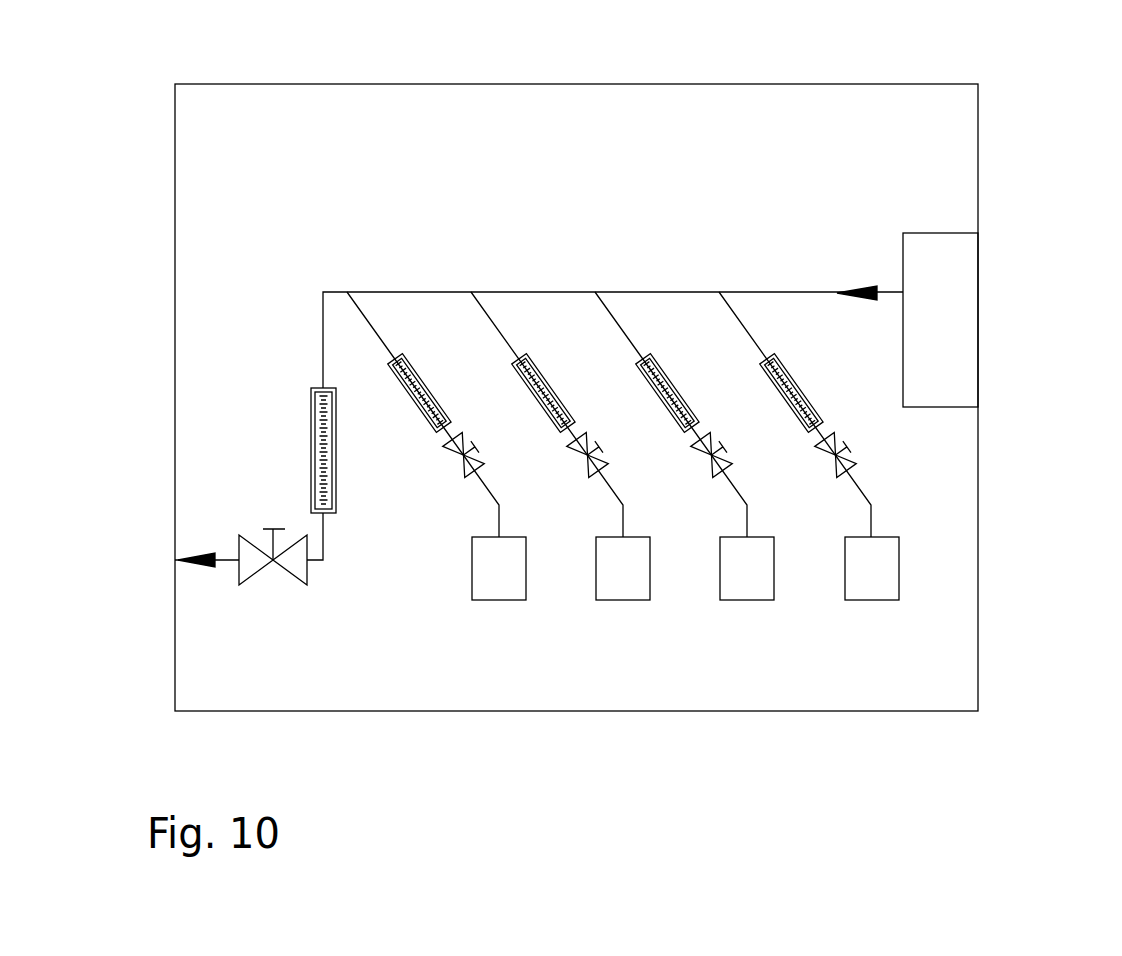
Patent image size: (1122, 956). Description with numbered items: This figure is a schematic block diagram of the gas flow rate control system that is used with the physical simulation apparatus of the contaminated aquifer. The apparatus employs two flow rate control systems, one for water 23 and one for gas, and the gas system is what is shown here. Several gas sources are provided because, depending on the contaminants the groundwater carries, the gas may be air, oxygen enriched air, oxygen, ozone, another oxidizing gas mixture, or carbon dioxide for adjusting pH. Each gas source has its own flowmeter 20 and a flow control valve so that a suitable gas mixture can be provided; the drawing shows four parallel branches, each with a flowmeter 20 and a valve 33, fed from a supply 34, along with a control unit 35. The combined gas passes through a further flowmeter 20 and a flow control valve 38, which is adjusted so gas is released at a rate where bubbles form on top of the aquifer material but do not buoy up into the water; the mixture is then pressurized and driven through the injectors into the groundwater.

The flowmeter 20 is at (480, 41).
The water flow rate control system 23 is at (365, 765).
The valves 33 is at (385, 527).
The gas sources 34 is at (551, 655).
The controller 35 is at (963, 386).
The flow control valve 38 is at (356, 634).